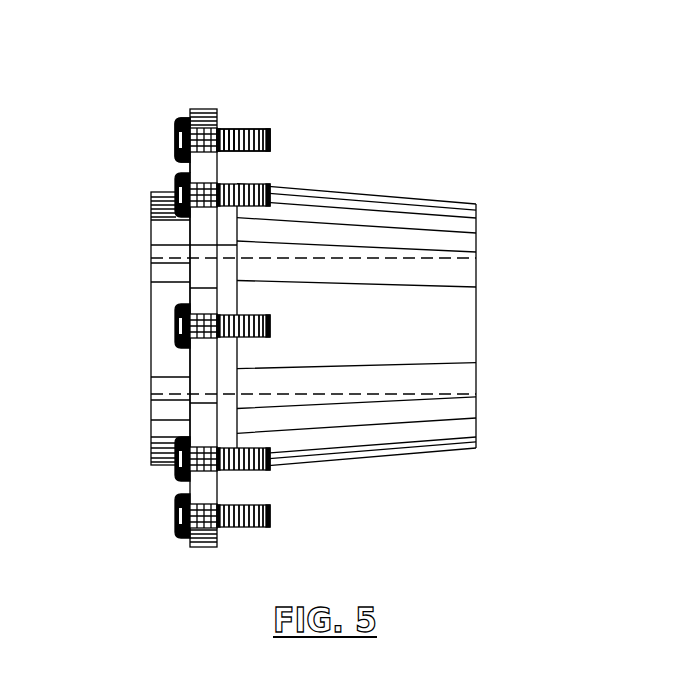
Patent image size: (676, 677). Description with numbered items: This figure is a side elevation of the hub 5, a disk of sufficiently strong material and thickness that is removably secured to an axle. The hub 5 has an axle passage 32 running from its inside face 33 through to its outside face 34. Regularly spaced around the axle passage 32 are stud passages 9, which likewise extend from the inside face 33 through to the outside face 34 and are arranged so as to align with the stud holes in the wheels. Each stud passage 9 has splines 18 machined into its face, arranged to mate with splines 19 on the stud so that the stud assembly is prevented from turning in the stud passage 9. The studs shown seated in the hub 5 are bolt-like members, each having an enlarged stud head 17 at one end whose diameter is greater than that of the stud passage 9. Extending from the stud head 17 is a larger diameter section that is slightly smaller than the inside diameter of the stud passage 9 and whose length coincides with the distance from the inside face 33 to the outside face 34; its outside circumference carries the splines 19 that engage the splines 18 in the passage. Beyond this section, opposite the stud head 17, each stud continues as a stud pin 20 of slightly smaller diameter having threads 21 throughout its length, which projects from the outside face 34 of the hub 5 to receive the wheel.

The hub 5 is at (188, 108).
The stud passage 9 is at (199, 108).
The stud head 17 is at (172, 138).
The splines 18 is at (208, 108).
The splines 19 is at (188, 163).
The stud pin 20 is at (253, 114).
The threads 21 is at (287, 115).
The axle passage 32 is at (417, 260).
The inside face 33 is at (188, 245).
The outside face 34 is at (217, 245).